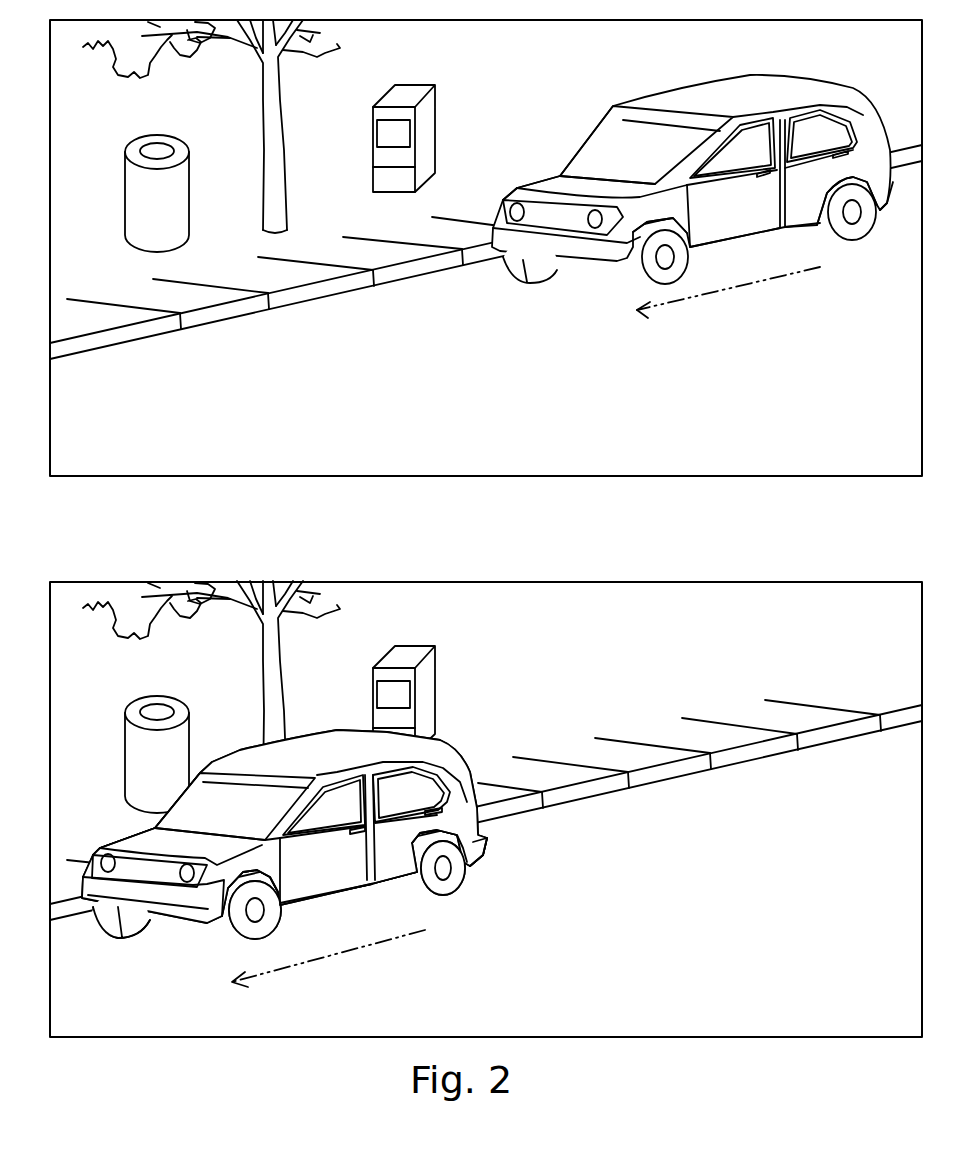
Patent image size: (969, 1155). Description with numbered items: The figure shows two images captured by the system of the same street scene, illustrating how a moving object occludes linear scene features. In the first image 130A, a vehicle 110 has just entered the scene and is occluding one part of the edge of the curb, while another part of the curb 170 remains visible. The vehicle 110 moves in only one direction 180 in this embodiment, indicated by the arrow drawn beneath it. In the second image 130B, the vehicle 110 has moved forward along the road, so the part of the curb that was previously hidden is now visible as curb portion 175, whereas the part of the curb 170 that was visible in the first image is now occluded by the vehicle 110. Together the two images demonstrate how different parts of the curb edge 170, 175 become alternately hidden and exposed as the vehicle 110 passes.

The vehicle 110 is at (573, 263).
The first image 130A is at (275, 476).
The second image 130B is at (486, 582).
The visible part of the curb 170 is at (230, 303).
The previously occluded part of the curb 175 is at (672, 763).
The direction 180 is at (745, 295).